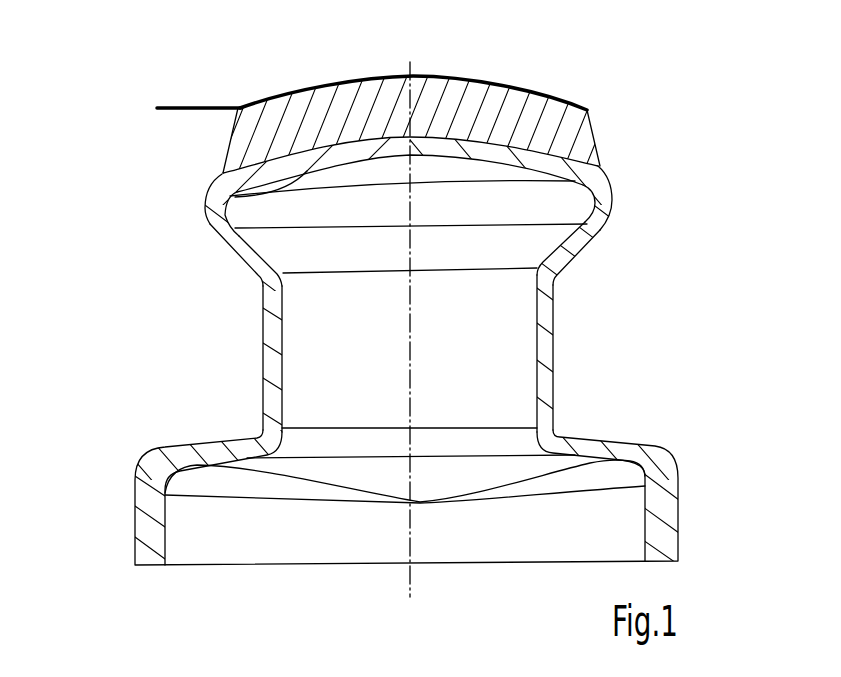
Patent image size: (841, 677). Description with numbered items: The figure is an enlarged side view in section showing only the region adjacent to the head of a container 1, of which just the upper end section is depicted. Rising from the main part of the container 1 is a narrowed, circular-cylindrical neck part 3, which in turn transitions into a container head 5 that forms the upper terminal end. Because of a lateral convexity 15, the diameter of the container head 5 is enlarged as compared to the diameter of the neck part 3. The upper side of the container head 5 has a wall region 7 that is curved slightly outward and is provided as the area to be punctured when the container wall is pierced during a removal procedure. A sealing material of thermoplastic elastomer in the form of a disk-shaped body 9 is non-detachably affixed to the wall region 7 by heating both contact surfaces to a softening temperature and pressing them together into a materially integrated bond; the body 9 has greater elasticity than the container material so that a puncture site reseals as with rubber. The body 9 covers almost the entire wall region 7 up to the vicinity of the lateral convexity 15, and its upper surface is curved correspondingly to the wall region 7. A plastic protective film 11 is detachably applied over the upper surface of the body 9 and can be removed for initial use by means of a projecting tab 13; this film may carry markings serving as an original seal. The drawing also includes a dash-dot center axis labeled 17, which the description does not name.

The container 1 is at (663, 513).
The neck part 3 is at (553, 367).
The container head 5 is at (607, 190).
The wall region 7 is at (207, 193).
The disk-shaped body 9 is at (543, 97).
The protective film 11 is at (460, 78).
The projecting tab 13 is at (177, 108).
The lateral convexity 15 is at (617, 208).
The central axis 17 is at (410, 64).